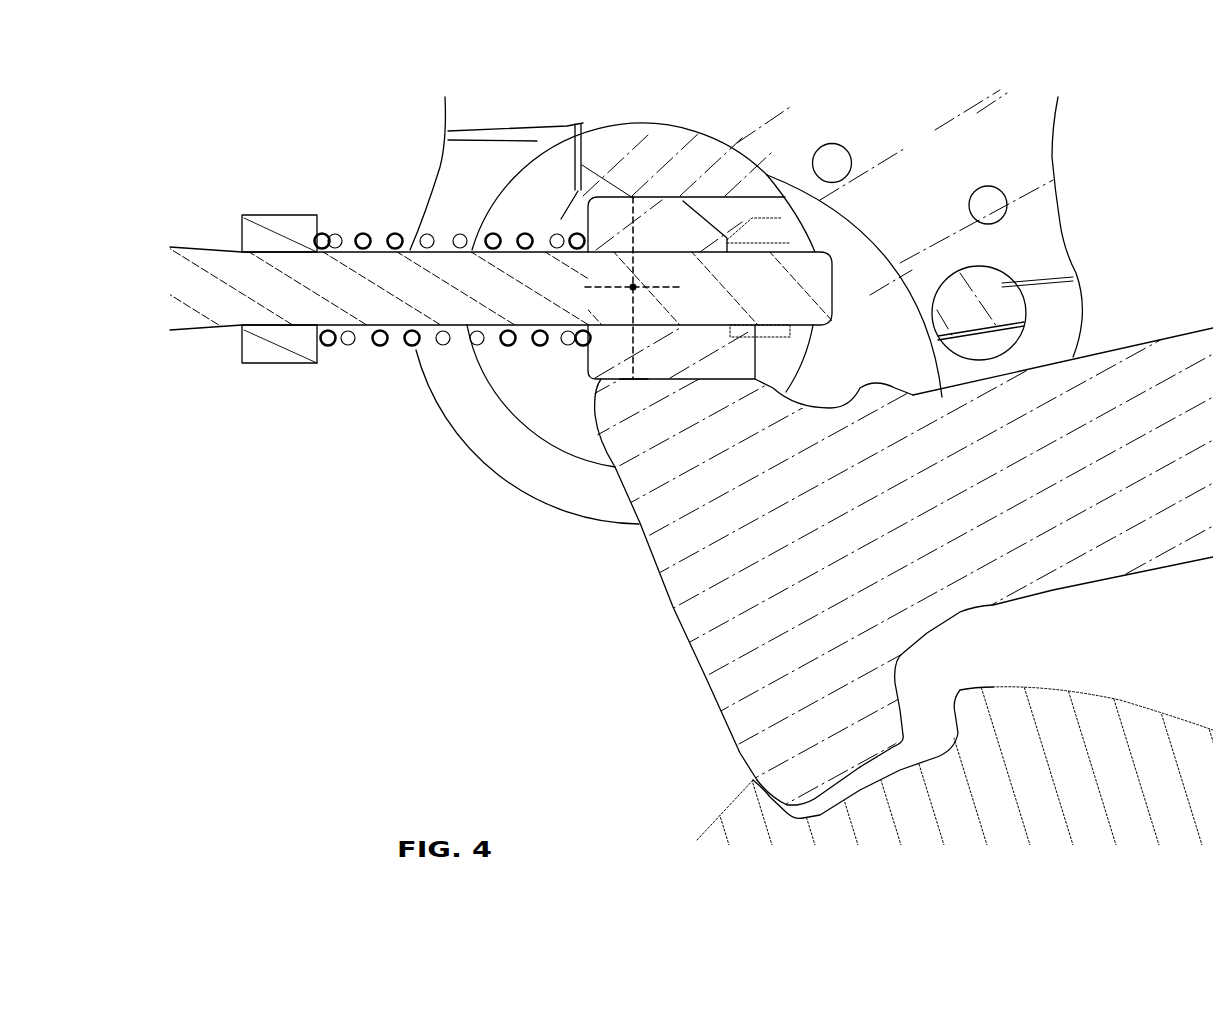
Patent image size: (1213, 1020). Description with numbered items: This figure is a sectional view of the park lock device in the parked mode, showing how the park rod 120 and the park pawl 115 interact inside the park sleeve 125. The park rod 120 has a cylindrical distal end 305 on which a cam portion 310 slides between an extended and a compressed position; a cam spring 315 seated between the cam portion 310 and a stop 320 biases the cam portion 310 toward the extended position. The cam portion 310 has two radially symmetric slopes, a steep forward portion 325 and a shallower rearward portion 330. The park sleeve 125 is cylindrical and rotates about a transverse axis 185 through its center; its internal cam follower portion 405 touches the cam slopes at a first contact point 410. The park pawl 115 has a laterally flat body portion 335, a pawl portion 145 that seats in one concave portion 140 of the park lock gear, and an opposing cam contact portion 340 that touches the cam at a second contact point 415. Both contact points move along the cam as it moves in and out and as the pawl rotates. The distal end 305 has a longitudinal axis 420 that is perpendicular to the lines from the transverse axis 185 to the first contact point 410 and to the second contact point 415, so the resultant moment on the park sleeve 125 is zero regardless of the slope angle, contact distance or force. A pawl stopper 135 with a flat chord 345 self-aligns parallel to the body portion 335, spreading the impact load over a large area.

The park pawl 115 is at (793, 577).
The park rod 120 is at (194, 299).
The park sleeve 125 is at (590, 502).
The pawl stopper 135 is at (1007, 307).
The concave portion 140 is at (932, 728).
The pawl portion 145 is at (805, 756).
The transverse axis 185 is at (627, 285).
The distal end 305 is at (803, 287).
The cam portion 310 is at (608, 365).
The cam spring 315 is at (378, 345).
The stop 320 is at (282, 352).
The steep forward portion 325 is at (705, 214).
The shallower rearward portion 330 is at (674, 197).
The body portion 335 is at (975, 439).
The cam contact portion 340 is at (663, 438).
The flat chord 345 is at (1001, 336).
The internal cam follower portion 405 is at (640, 163).
The first contact point 410 is at (637, 202).
The second contact point 415 is at (636, 377).
The longitudinal axis 420 is at (680, 295).